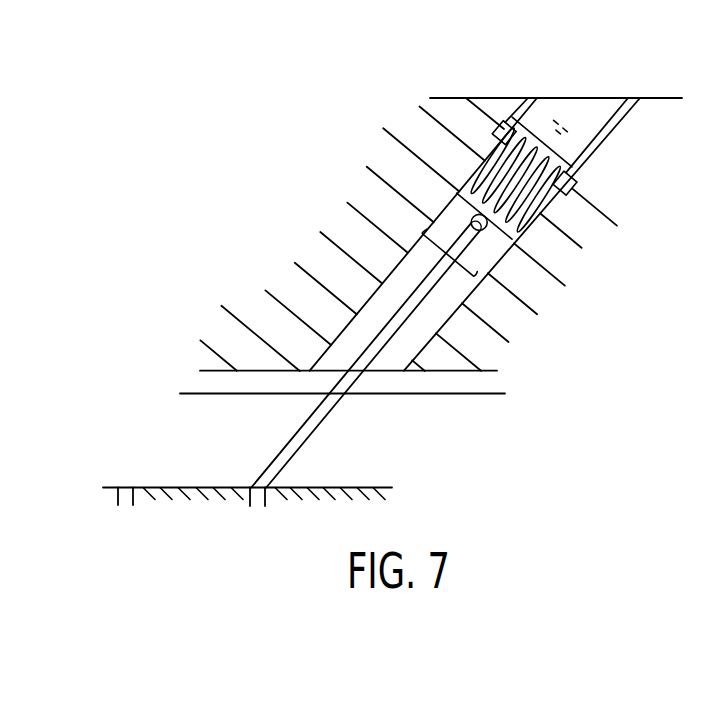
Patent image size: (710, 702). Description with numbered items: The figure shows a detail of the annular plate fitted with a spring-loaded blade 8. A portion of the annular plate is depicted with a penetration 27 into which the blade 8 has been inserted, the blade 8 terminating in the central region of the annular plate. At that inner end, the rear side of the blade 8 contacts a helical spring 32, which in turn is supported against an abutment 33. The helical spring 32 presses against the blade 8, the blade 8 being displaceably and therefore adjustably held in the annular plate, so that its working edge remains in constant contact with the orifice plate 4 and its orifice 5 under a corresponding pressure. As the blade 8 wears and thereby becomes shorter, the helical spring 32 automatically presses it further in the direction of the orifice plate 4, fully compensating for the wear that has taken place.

The penetration 27 is at (396, 296).
The abutment 33 is at (577, 150).
The helical spring 32 is at (540, 216).
The blade 8 is at (302, 438).
The orifice plate 4 is at (178, 497).
The orifice 5 is at (128, 505).